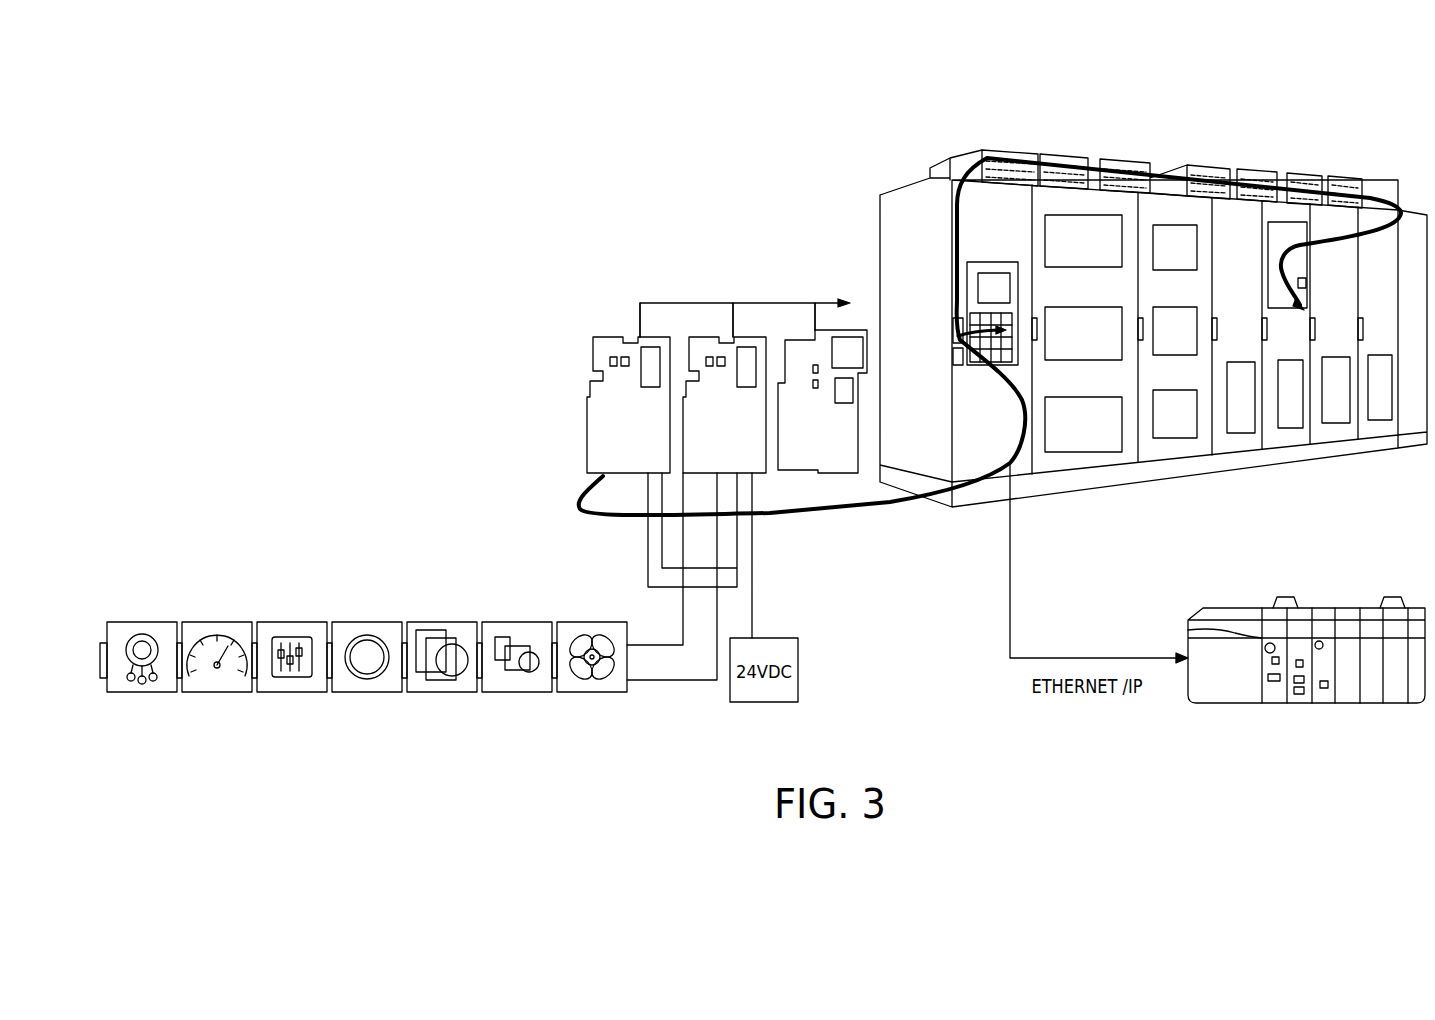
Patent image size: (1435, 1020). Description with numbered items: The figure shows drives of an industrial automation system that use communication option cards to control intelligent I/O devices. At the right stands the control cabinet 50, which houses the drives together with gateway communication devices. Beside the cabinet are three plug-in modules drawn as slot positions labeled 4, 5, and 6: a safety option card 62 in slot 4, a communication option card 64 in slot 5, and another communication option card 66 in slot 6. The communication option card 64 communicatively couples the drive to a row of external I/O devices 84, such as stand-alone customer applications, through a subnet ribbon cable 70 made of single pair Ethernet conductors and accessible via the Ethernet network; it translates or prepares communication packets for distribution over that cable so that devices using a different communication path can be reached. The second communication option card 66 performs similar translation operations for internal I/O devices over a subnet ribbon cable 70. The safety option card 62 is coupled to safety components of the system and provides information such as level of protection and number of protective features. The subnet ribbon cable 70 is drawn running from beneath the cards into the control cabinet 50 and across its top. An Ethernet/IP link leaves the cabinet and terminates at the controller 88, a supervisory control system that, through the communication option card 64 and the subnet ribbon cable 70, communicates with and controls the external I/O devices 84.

The control cabinet 50 is at (1392, 189).
The safety option card 62 is at (790, 340).
The communication option card 64 is at (697, 338).
The communication option card 66 is at (594, 359).
The subnet ribbon cable 70 is at (857, 511).
The external I/O devices 84 is at (548, 738).
The controller 88 is at (1237, 607).
The slot 4 is at (806, 317).
The slot 5 is at (725, 320).
The slot 6 is at (631, 320).